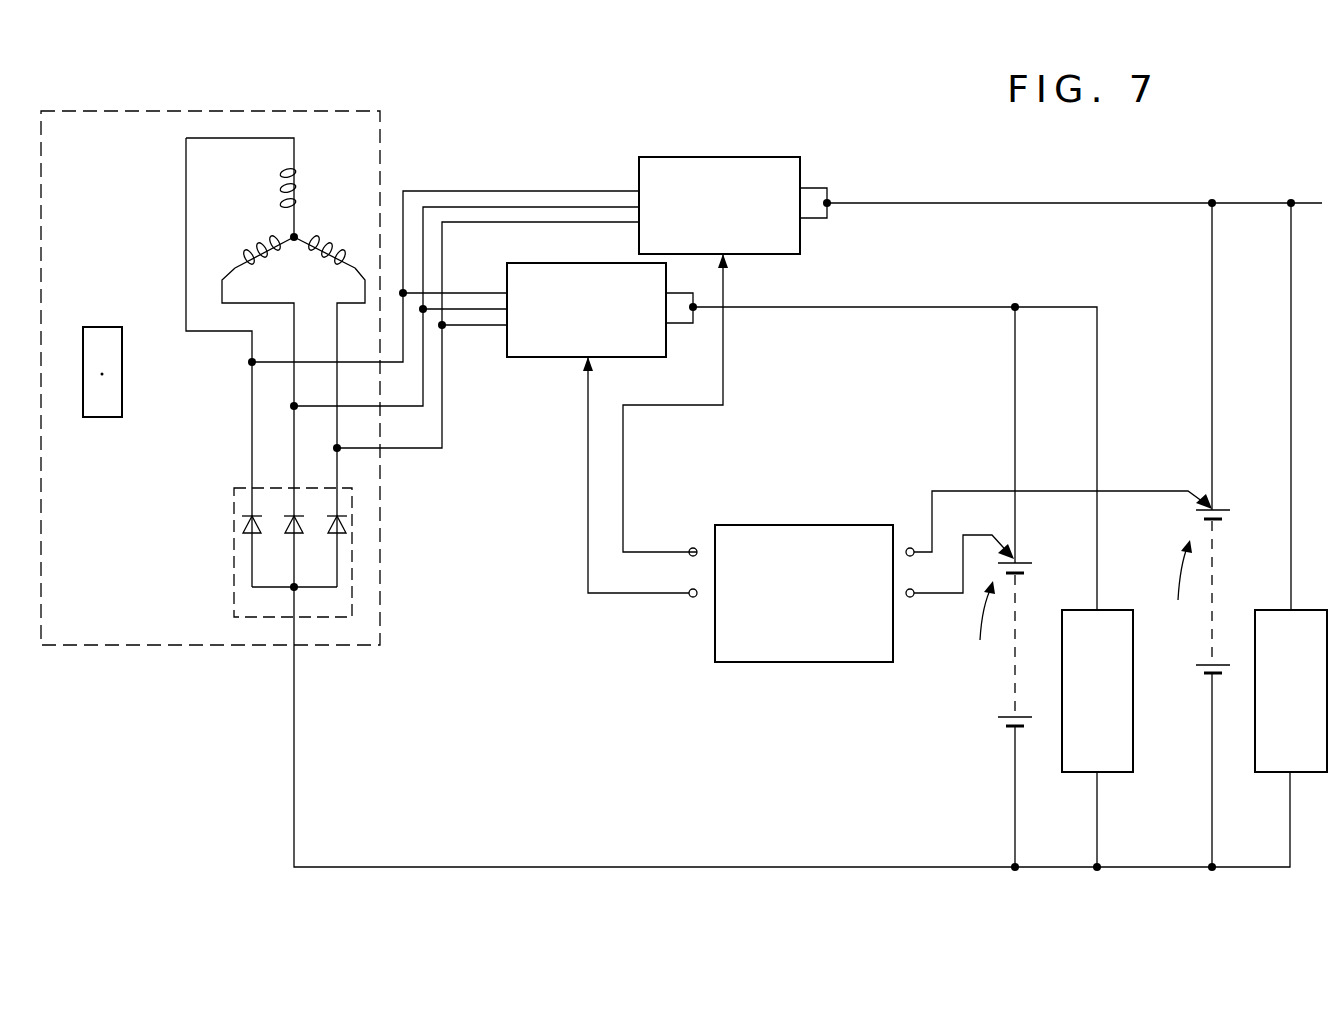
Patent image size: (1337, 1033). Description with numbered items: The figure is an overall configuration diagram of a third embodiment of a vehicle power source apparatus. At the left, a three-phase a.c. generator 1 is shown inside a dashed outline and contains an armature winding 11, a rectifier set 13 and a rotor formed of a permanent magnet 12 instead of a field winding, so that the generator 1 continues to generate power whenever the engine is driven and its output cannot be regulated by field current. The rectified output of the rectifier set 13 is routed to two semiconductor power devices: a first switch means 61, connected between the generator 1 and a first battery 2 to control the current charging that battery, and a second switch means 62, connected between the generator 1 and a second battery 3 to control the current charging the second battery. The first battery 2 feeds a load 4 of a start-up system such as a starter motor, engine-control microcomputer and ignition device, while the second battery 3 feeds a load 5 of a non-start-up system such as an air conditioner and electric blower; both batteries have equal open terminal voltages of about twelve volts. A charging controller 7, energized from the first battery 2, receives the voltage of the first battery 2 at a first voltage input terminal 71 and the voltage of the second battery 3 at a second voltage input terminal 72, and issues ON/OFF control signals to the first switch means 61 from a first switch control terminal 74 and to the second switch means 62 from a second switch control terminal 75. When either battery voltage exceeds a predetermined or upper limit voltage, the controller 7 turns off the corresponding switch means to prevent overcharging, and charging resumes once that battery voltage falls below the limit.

The three-phase a.c. generator 1 is at (386, 140).
The armature winding 11 is at (318, 238).
The permanent magnet 12 is at (124, 395).
The rectifier set 13 is at (240, 488).
The first switch means 61 is at (535, 263).
The second switch means 62 is at (740, 157).
The charging controller 7 is at (780, 525).
The first voltage input terminal 71 is at (910, 598).
The second voltage input terminal 72 is at (910, 548).
The first switch control terminal 74 is at (692, 598).
The second switch control terminal 75 is at (690, 548).
The first battery 2 is at (1022, 548).
The second battery 3 is at (1222, 505).
The load of a start-up system 4 is at (1116, 608).
The load of a non-start-up system 5 is at (1312, 608).